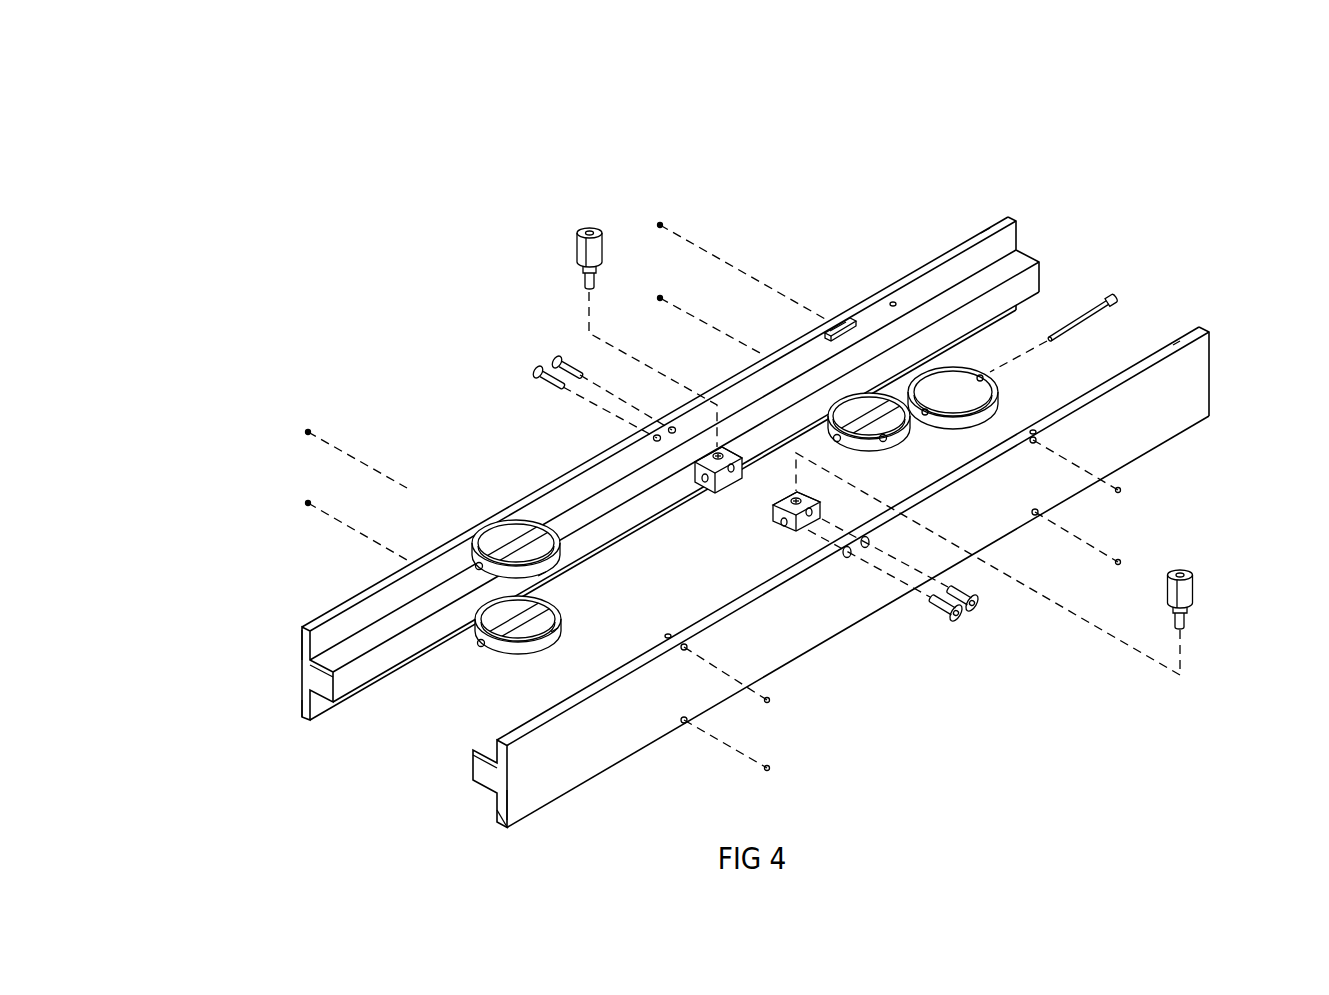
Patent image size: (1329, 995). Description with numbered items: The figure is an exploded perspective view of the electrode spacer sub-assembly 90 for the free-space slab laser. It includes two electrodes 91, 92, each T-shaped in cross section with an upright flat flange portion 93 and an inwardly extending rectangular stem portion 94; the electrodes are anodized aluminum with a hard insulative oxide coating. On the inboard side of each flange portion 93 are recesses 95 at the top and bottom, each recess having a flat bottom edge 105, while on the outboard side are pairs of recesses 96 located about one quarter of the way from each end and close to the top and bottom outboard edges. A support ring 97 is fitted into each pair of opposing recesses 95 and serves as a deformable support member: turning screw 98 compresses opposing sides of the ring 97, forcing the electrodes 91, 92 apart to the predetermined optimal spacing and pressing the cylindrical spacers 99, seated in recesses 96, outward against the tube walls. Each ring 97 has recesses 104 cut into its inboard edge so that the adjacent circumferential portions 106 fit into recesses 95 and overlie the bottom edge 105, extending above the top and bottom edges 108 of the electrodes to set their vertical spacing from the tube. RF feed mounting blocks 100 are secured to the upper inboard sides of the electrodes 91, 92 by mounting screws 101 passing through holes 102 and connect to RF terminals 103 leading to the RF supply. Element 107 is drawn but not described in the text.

The electrode spacer sub-assembly 90 is at (1075, 150).
The electrode 91 is at (1042, 250).
The electrode 92 is at (1211, 350).
The flange portion 93 is at (305, 643).
The stem portion 94 is at (317, 688).
The recess 95 is at (846, 318).
The recess 96 is at (1033, 443).
The support ring 97 is at (560, 553).
The screw 98 is at (483, 652).
The spacer 99 is at (308, 500).
The RF feed mounting block 100 is at (775, 520).
The mounting screw 101 is at (552, 367).
The hole 102 is at (652, 438).
The RF terminal 103 is at (588, 227).
The recess 104 is at (540, 577).
The bottom edge 105 is at (893, 303).
The circumferential portion 106 is at (1058, 327).
The block 107 is at (742, 452).
The top and bottom edge 108 is at (306, 717).